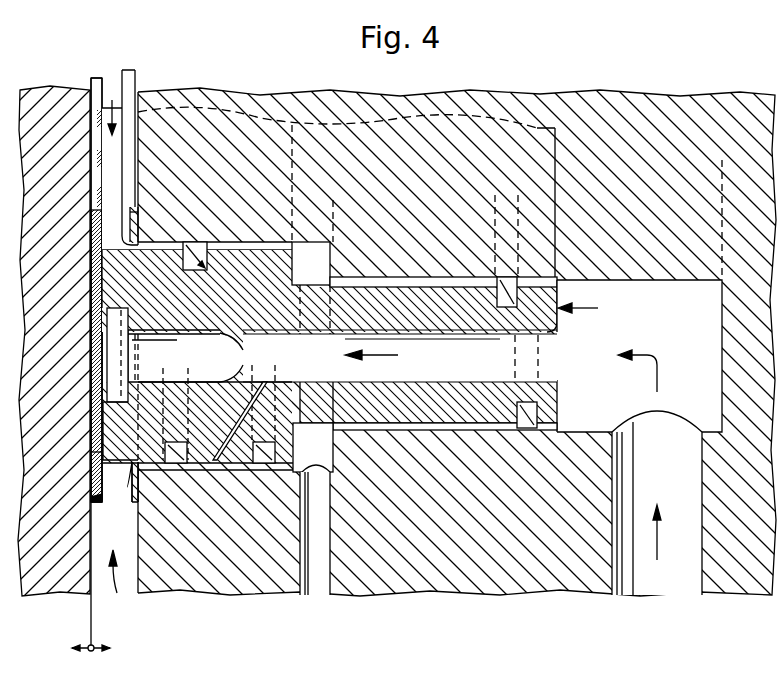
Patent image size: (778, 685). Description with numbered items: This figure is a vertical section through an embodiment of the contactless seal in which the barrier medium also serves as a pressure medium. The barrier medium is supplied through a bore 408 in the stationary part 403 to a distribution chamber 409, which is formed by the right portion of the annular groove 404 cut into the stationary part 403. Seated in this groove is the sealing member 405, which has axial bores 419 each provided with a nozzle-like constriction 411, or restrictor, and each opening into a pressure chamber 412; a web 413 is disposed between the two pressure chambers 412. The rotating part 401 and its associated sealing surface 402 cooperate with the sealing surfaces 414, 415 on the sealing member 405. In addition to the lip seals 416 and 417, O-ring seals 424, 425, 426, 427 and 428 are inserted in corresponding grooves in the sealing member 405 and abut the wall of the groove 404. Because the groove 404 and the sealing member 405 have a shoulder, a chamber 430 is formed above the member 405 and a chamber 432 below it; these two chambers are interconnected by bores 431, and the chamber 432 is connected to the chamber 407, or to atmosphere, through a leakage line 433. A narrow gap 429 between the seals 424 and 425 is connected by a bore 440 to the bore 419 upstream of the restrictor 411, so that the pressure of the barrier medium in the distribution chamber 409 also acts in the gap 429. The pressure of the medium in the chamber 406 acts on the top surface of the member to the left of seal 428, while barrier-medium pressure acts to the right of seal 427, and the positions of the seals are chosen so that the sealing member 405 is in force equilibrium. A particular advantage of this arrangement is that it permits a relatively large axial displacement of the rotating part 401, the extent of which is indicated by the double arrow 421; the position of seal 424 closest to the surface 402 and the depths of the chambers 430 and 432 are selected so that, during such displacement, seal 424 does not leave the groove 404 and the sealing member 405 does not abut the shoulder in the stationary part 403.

The rotating part 401 is at (53, 92).
The sealing surface 402 is at (105, 297).
The stationary part 403 is at (205, 92).
The annular groove 404 is at (343, 283).
The sealing member 405 is at (639, 437).
The chamber 406 is at (113, 82).
The chamber 407 is at (128, 584).
The bore 408 is at (700, 538).
The distribution chamber 409 is at (621, 373).
The nozzle-like constriction 411 is at (232, 362).
The pressure chamber 412 is at (127, 322).
The web 413 is at (108, 372).
The sealing surface 414 is at (100, 272).
The sealing surface 415 is at (102, 452).
The lip seal 416 is at (134, 218).
The lip seal 417 is at (130, 488).
The axial bore 419 is at (428, 378).
The double arrow 421 is at (100, 652).
The seal 424 is at (178, 466).
The seal 425 is at (266, 466).
The seal 426 is at (527, 430).
The seal 427 is at (502, 284).
The seal 428 is at (190, 250).
The narrow gap 429 is at (216, 472).
The chamber 430 is at (325, 260).
The bore 431 is at (303, 400).
The chamber 432 is at (297, 457).
The leakage line 433 is at (327, 568).
The bore 440 is at (215, 397).